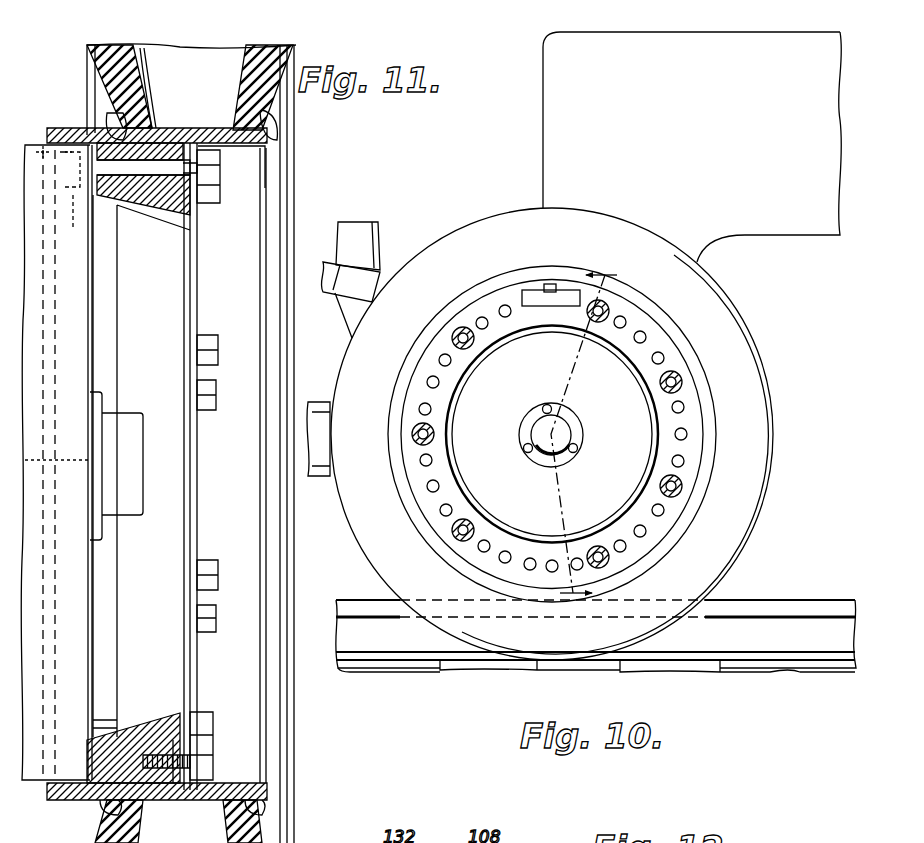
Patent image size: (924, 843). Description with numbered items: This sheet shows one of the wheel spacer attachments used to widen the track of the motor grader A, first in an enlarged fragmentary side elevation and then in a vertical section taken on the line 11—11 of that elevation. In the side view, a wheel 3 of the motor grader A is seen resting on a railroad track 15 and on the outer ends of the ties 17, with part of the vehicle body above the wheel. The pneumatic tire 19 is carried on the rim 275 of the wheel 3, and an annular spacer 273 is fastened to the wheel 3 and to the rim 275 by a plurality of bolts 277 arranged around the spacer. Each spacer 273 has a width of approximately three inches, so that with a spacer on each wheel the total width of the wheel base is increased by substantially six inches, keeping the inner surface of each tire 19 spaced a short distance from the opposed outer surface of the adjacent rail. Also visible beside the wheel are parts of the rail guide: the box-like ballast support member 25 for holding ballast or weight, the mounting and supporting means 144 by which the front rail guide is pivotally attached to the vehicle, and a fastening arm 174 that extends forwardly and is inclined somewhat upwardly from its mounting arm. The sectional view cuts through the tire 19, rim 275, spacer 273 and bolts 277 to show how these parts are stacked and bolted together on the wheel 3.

In FIG. 11, the wheel 3 is at (258, 45).
In FIG. 10, the wheel 3 is at (512, 215).
In FIG. 10, the section line 11— 11 is at (614, 428).
In FIG. 10, the railroad track 15 is at (782, 603).
In FIG. 10, the tie 17 is at (735, 672).
In FIG. 11, the pneumatic tire 19 is at (88, 56).
In FIG. 10, the ballast support member 25 is at (318, 480).
In FIG. 10, the mounting and supporting means 144 is at (364, 222).
In FIG. 10, the fastening arm 174 is at (390, 272).
In FIG. 11, the annular spacer 273 is at (137, 195).
In FIG. 10, the annular spacer 273 is at (619, 357).
In FIG. 11, the rim 275 is at (265, 142).
In FIG. 11, the bolt 277 is at (222, 170).
In FIG. 10, the bolt 277 is at (472, 349).
In FIG. 10, the motor grader A is at (543, 125).